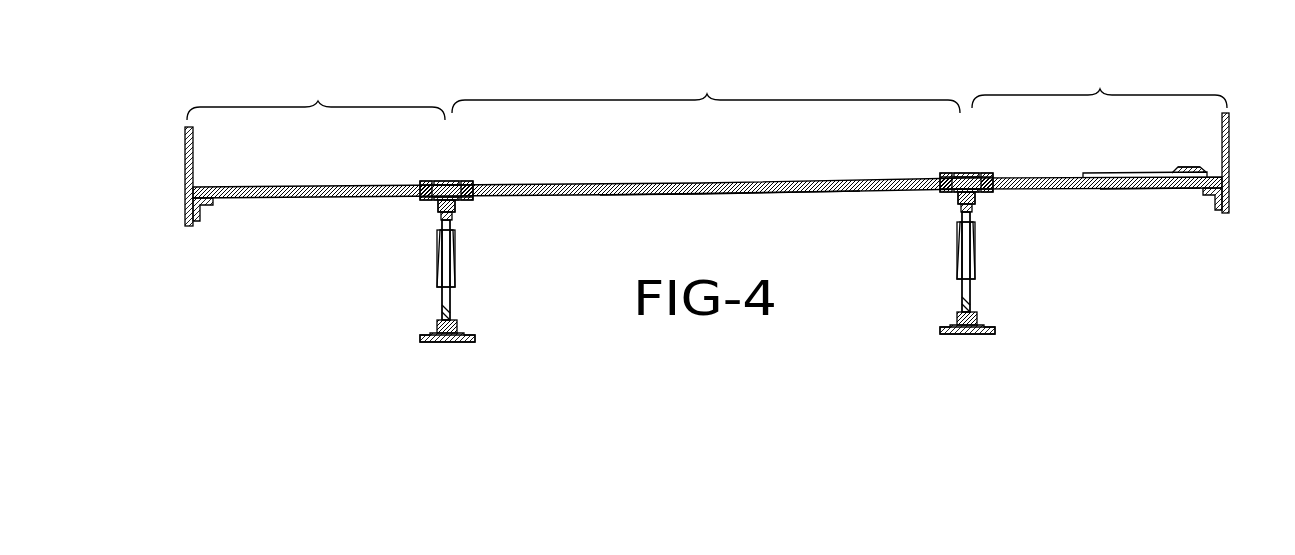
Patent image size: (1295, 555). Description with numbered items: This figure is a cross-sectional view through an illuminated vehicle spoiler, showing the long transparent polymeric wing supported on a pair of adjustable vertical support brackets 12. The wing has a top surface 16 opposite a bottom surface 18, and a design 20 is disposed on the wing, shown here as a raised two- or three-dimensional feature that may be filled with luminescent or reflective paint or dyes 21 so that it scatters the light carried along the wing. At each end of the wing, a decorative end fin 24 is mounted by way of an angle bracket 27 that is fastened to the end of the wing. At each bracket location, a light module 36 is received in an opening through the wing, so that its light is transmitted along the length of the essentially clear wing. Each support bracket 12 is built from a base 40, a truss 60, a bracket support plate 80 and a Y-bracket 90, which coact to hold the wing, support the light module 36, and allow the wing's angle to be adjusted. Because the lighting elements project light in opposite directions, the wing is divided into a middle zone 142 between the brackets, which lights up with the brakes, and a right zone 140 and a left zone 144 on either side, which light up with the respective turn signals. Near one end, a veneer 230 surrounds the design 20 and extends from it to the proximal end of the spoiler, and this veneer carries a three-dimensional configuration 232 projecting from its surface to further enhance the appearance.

The adjustable vertical support bracket 12 is at (706, 257).
The top surface 16 is at (636, 183).
The bottom surface 18 is at (760, 194).
The design 20 is at (1112, 172).
The paint or dyes 21 is at (1150, 190).
The decorative end fin 24 is at (184, 160).
The angle bracket 27 is at (210, 205).
The light module 36 is at (455, 178).
The base 40 is at (437, 341).
The truss 60 is at (456, 302).
The bracket support plate 80 is at (437, 215).
The Y-bracket 90 is at (463, 258).
The right zone 140 is at (1100, 90).
The middle zone 142 is at (707, 96).
The left zone 144 is at (318, 101).
The veneer 230 is at (1163, 172).
The three-dimensional configuration 232 is at (1176, 166).